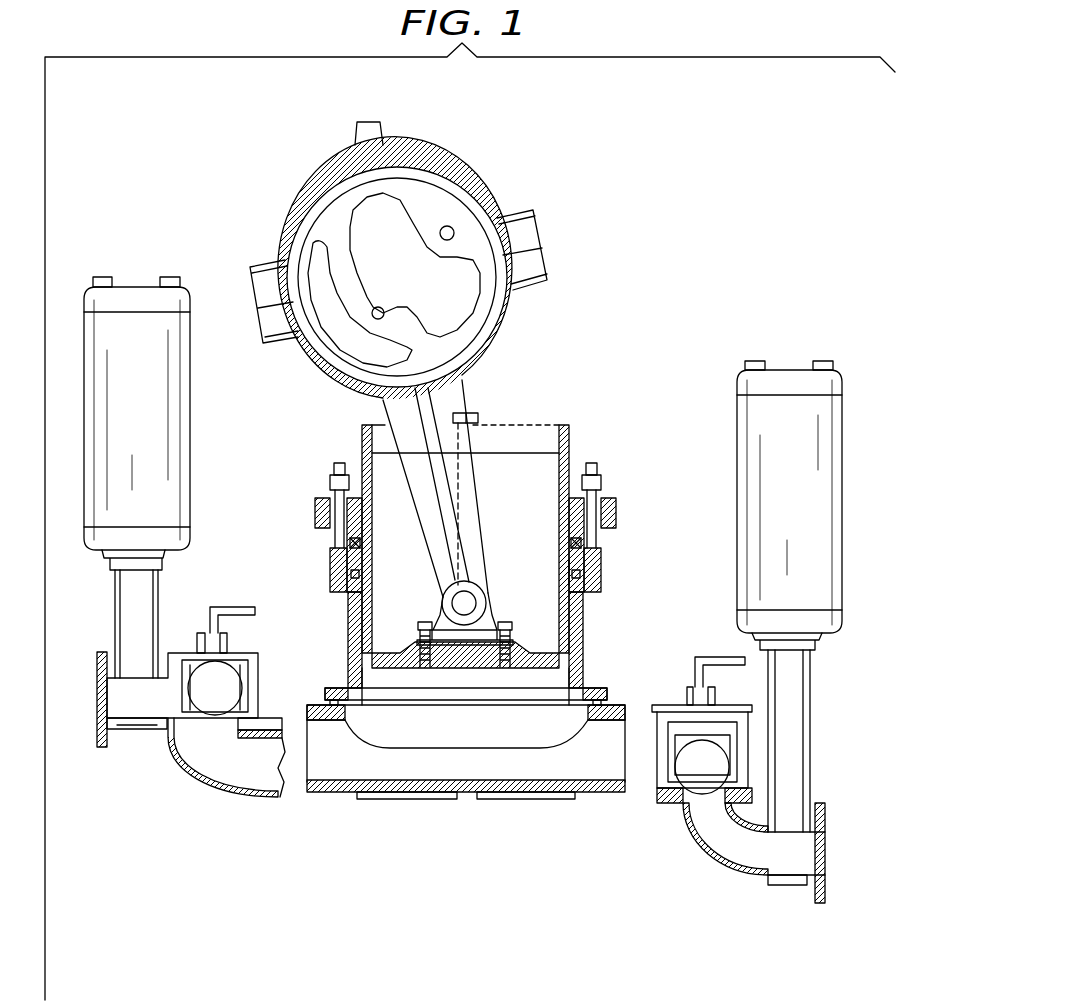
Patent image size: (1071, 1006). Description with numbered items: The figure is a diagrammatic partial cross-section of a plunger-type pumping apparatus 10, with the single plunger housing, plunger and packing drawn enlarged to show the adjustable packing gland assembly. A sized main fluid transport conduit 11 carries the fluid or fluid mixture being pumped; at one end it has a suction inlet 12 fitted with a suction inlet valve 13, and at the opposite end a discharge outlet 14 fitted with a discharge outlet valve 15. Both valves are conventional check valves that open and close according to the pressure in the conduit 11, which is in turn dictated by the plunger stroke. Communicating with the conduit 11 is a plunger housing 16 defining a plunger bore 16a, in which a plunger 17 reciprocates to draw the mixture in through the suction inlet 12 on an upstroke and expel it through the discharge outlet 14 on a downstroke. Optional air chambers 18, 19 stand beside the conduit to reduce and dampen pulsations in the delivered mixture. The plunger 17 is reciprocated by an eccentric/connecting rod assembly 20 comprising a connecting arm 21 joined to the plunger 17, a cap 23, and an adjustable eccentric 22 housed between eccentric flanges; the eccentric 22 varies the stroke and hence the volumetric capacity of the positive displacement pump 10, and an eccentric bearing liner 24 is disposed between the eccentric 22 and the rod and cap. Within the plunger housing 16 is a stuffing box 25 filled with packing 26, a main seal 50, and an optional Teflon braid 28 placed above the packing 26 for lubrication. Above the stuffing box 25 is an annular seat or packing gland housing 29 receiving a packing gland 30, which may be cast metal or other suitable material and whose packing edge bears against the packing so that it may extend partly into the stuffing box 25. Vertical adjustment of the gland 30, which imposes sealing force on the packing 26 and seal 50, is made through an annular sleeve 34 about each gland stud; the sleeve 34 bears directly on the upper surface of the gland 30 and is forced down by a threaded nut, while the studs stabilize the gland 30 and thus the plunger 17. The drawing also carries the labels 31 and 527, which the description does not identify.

The pumping apparatus 10 is at (620, 343).
The main fluid transport conduit 11 is at (333, 792).
The suction inlet 12 is at (683, 803).
The suction inlet valve 13 is at (705, 792).
The discharge outlet 14 is at (212, 763).
The discharge outlet valve 15 is at (203, 695).
The plunger housing 16 is at (347, 658).
The plunger bore 16a is at (443, 690).
The plunger 17 is at (362, 446).
The air chamber 18 is at (190, 414).
The air chamber 19 is at (737, 450).
The eccentric/connecting rod assembly 20 is at (500, 395).
The connecting arm 21 is at (432, 547).
The adjustable eccentric 22 is at (450, 212).
The cap 23 is at (405, 138).
The eccentric bearing liner 24 is at (433, 178).
The stuffing box 25 is at (602, 582).
The packing 26 is at (566, 560).
The Teflon braid 28 is at (567, 533).
The packing gland housing 29 is at (612, 515).
The packing gland 30 is at (570, 490).
The piston 31 is at (560, 507).
The annular sleeve 34 is at (602, 490).
The main seal 50 is at (570, 544).
The sealing ring 527 is at (567, 572).